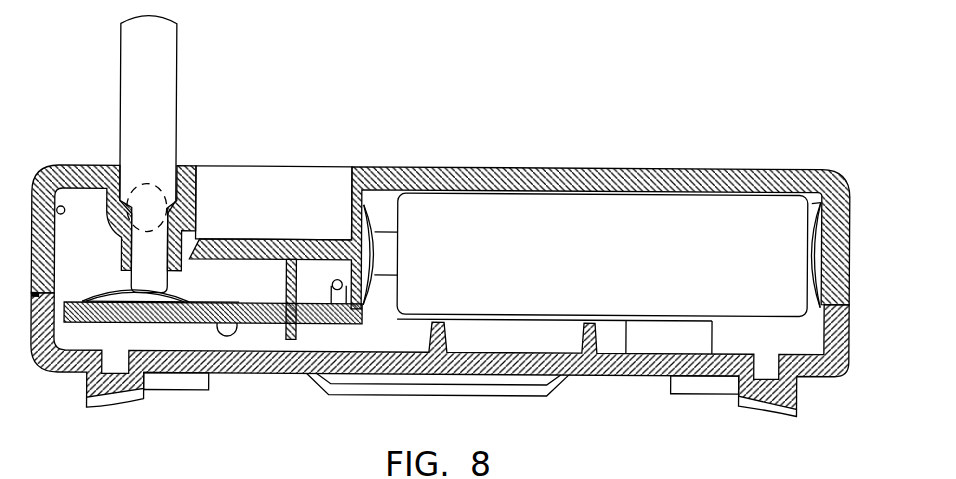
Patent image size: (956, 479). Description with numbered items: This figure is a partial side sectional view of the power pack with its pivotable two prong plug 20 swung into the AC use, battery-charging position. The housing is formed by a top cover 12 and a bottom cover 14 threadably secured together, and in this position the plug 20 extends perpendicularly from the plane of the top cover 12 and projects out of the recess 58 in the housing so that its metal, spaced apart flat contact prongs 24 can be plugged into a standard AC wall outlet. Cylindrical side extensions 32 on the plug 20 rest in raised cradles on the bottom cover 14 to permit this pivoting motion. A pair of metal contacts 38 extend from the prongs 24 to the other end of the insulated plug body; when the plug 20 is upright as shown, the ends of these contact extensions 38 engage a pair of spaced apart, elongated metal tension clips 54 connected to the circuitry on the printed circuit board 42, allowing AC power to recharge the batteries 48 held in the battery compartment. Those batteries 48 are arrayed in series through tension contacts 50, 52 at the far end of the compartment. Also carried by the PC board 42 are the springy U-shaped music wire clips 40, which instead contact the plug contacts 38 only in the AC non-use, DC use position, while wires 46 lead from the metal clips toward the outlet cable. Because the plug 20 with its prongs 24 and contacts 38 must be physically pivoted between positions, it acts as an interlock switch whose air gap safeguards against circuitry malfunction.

The top cover 12 is at (833, 363).
The bottom cover 14 is at (825, 166).
The two prong plug 20 is at (121, 250).
The contact prongs 24 is at (148, 80).
The cylindrical side extensions 32 is at (147, 207).
The metal contacts 38 is at (147, 285).
The music wire clips 40 is at (64, 204).
The printed circuit board 42 is at (270, 311).
The wires 46 is at (334, 281).
The batteries 48 is at (602, 255).
The tension contact 50 is at (367, 288).
The tension contact 52 is at (812, 254).
The elongated metal tension clips 54 is at (190, 300).
The recess 58 is at (274, 203).